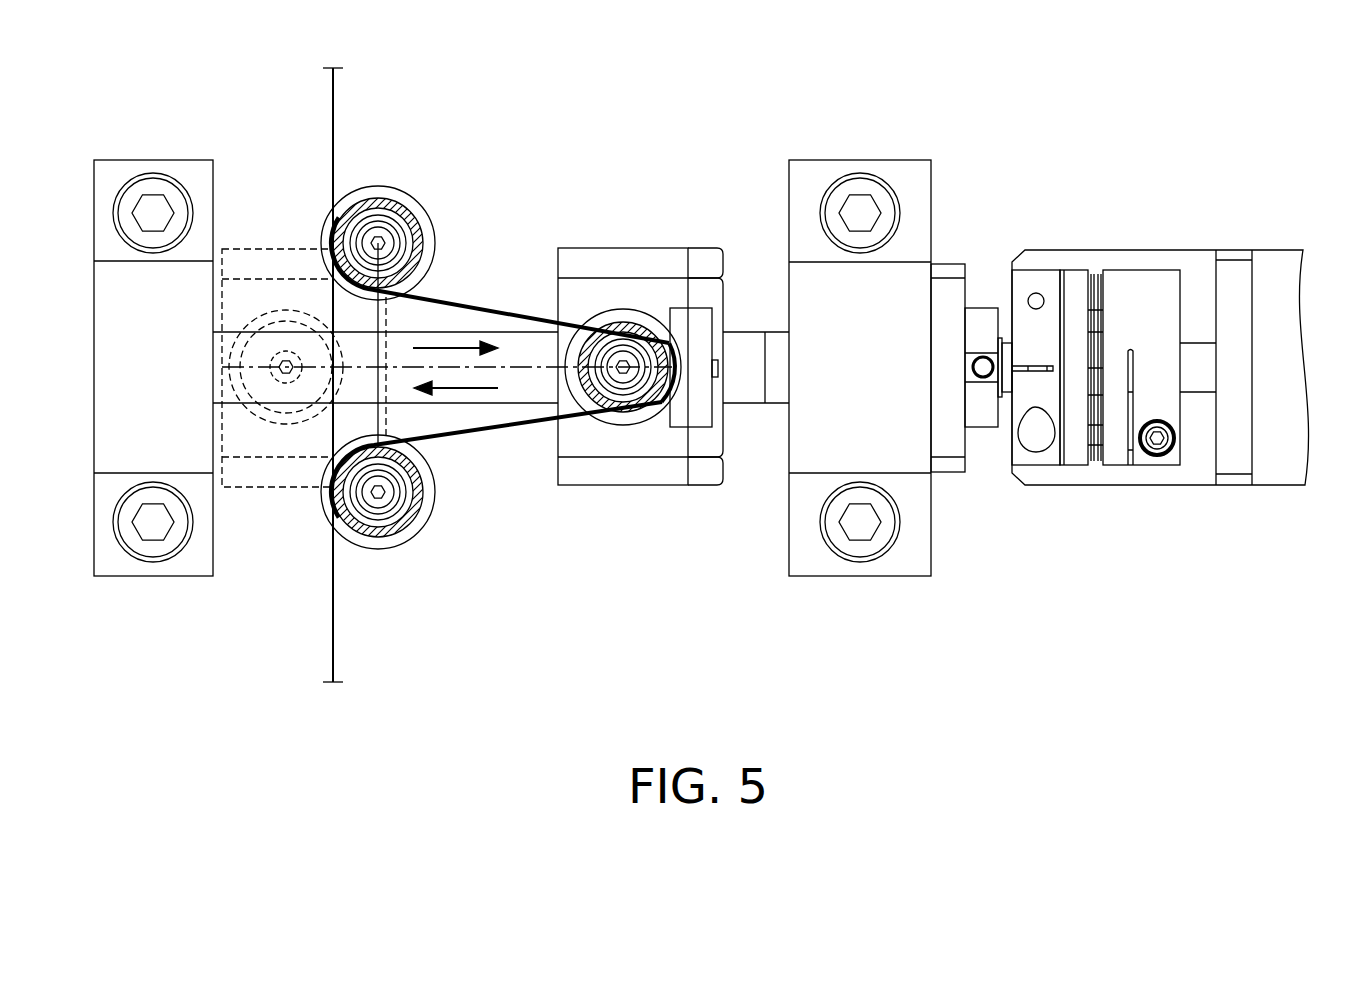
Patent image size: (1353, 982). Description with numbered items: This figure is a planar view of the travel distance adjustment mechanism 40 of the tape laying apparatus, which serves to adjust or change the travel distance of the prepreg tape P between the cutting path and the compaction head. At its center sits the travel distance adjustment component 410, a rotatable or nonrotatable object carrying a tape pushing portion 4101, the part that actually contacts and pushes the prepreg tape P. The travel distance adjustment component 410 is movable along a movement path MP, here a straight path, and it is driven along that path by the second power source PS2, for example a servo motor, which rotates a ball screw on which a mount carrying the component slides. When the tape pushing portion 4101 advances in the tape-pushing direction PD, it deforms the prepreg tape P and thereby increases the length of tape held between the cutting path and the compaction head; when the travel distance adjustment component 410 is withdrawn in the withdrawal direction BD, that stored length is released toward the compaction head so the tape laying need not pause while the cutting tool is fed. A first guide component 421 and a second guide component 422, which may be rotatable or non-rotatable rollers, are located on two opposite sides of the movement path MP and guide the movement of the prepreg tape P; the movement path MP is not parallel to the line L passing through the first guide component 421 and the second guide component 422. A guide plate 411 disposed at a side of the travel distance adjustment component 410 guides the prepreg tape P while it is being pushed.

The travel distance adjustment mechanism 40 is at (652, 614).
The travel distance adjustment component 410 is at (505, 380).
The tape pushing portion 4101 is at (672, 365).
The guide plate 411 is at (693, 404).
The first guide component 421 is at (413, 233).
The second guide component 422 is at (386, 530).
The prepreg tape P is at (332, 137).
The tape-pushing direction PD is at (450, 340).
The withdrawal direction BD is at (473, 393).
The movement path MP is at (507, 363).
The line L is at (380, 413).
The second power source PS2 is at (1274, 262).